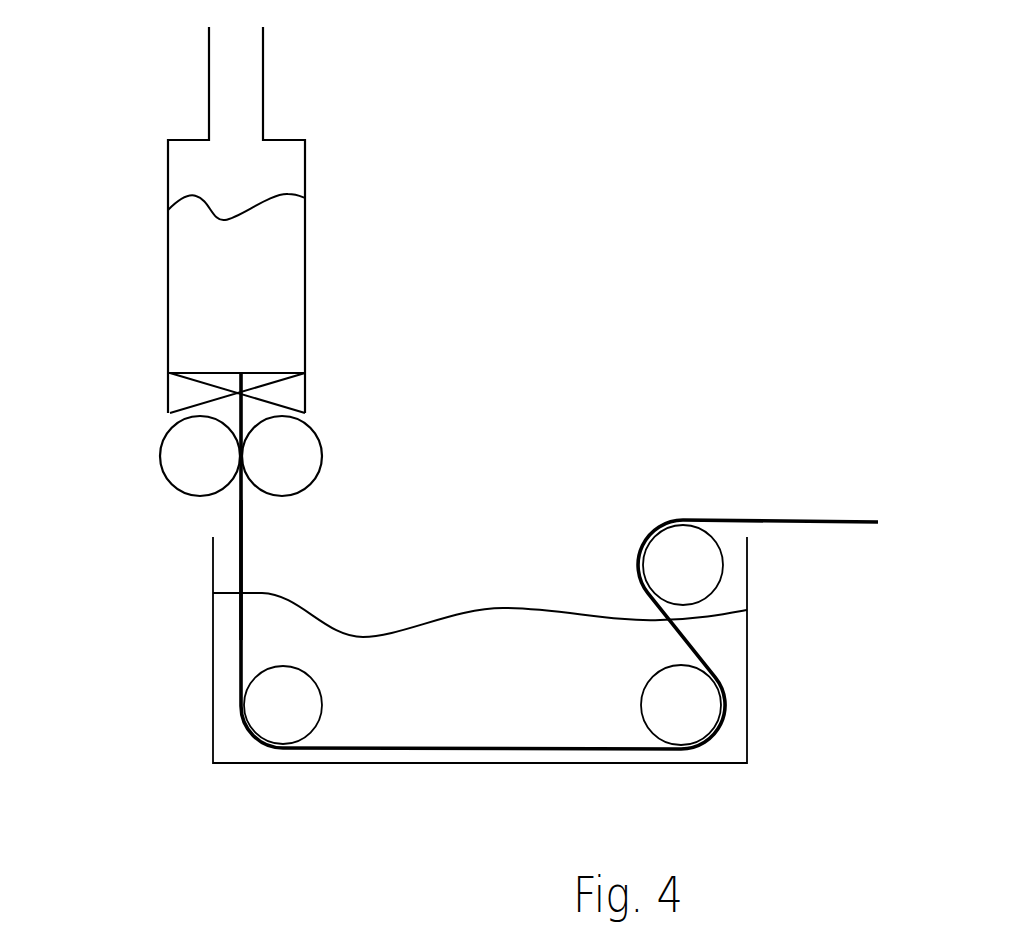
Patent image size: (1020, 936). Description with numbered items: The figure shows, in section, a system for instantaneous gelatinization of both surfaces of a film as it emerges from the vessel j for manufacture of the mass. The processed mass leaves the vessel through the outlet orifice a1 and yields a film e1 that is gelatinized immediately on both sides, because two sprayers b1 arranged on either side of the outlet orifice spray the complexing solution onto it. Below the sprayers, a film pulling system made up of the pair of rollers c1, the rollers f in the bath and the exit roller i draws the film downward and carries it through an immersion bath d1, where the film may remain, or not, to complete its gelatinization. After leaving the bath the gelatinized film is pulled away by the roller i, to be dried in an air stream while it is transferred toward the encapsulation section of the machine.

The hopper / reservoir of coating material j is at (265, 292).
The outlet orifice a1 is at (257, 373).
The sprayer b1 is at (162, 401).
The film pulling system roller c1 is at (148, 456).
The immersion bath d1 is at (335, 649).
The film e1 is at (255, 553).
The film pulling system roller f is at (255, 720).
The film pulling system roller i is at (707, 565).